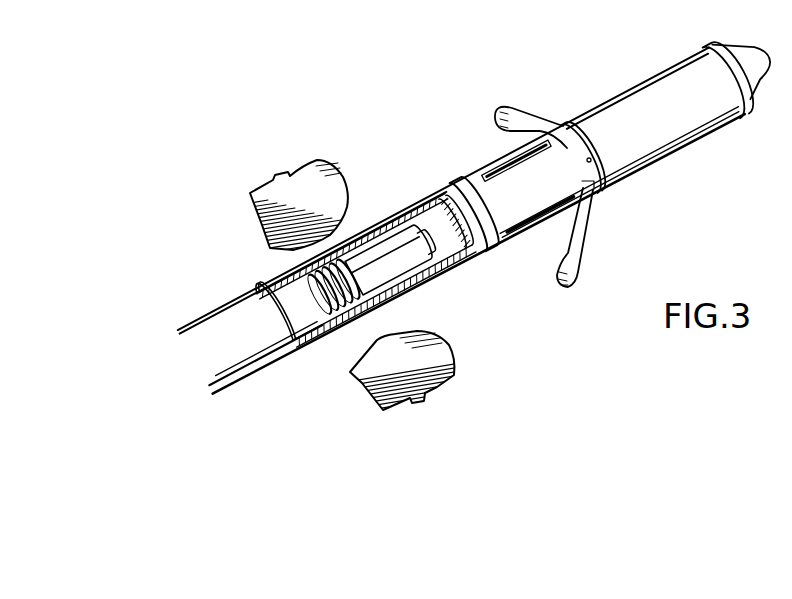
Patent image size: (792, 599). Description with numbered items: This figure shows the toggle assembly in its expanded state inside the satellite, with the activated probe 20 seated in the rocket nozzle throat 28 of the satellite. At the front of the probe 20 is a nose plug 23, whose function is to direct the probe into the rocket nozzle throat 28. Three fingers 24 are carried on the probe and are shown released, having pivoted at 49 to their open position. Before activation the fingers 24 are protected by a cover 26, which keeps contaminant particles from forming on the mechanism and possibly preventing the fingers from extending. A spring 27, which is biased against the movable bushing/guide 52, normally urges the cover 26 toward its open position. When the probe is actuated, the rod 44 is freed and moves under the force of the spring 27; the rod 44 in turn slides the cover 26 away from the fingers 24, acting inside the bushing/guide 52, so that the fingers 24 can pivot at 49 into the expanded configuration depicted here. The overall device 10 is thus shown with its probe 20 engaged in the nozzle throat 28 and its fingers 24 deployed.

The writing instrument 10 is at (461, 198).
The activated probe 20 is at (606, 76).
The nose plug 23 is at (760, 100).
The fingers 24 is at (498, 106).
The cover 26 is at (648, 169).
The spring 27 is at (321, 333).
The rocket nozzle throat 28 is at (341, 183).
The rod 44 is at (390, 258).
The pivot 49 is at (589, 207).
The bushing/guide 52 is at (383, 297).